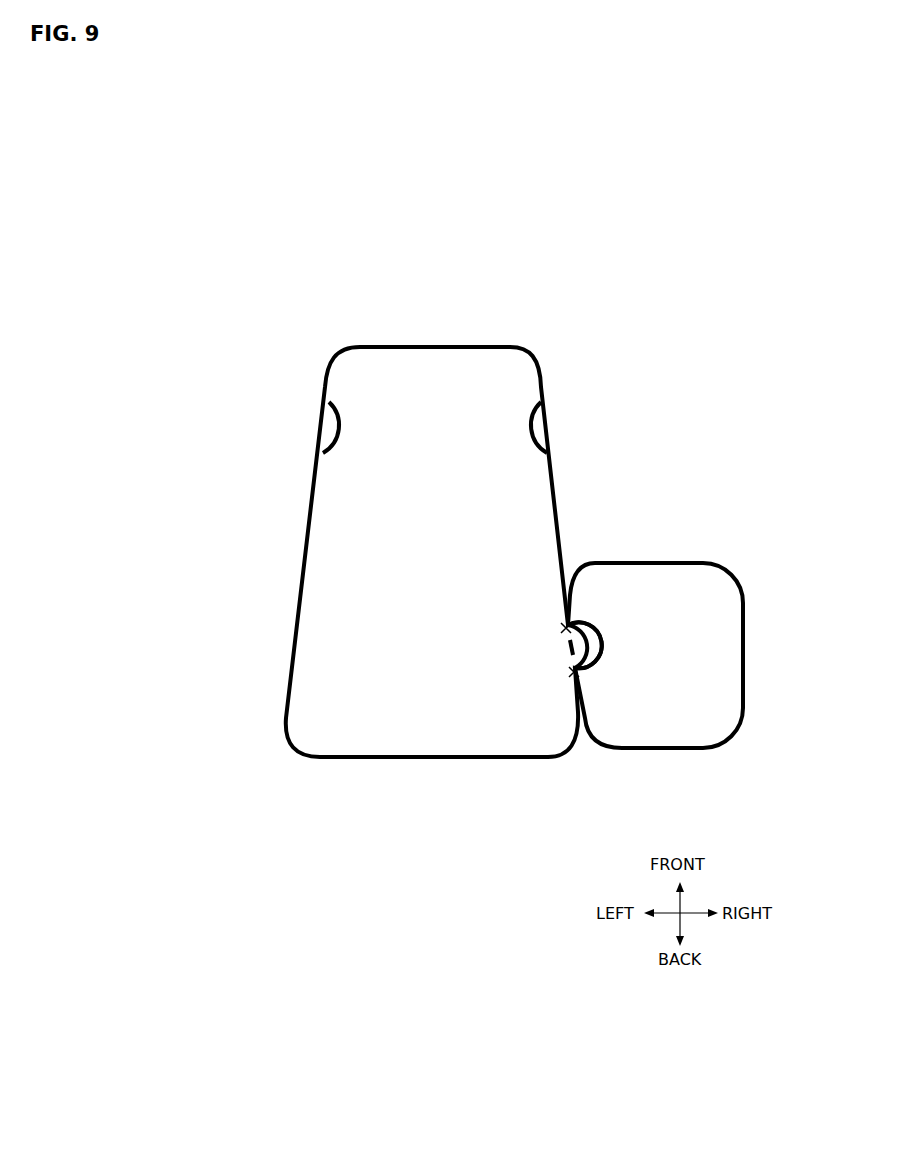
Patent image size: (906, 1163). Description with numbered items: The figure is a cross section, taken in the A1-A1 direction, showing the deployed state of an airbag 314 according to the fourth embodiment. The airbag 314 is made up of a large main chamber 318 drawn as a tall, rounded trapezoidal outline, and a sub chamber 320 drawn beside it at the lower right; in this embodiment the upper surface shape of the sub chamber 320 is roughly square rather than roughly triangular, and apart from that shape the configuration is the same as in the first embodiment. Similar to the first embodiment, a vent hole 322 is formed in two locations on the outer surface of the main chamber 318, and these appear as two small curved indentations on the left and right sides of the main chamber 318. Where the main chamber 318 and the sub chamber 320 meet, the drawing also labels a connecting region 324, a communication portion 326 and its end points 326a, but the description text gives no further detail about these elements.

The airbag 314 is at (348, 316).
The main chamber 318 is at (301, 570).
The sub chamber 320 is at (676, 561).
The vent hole 322 is at (328, 428).
The connecting portion 324 is at (565, 652).
The communication portion 326 is at (598, 647).
The sewn portion 326a is at (568, 625).